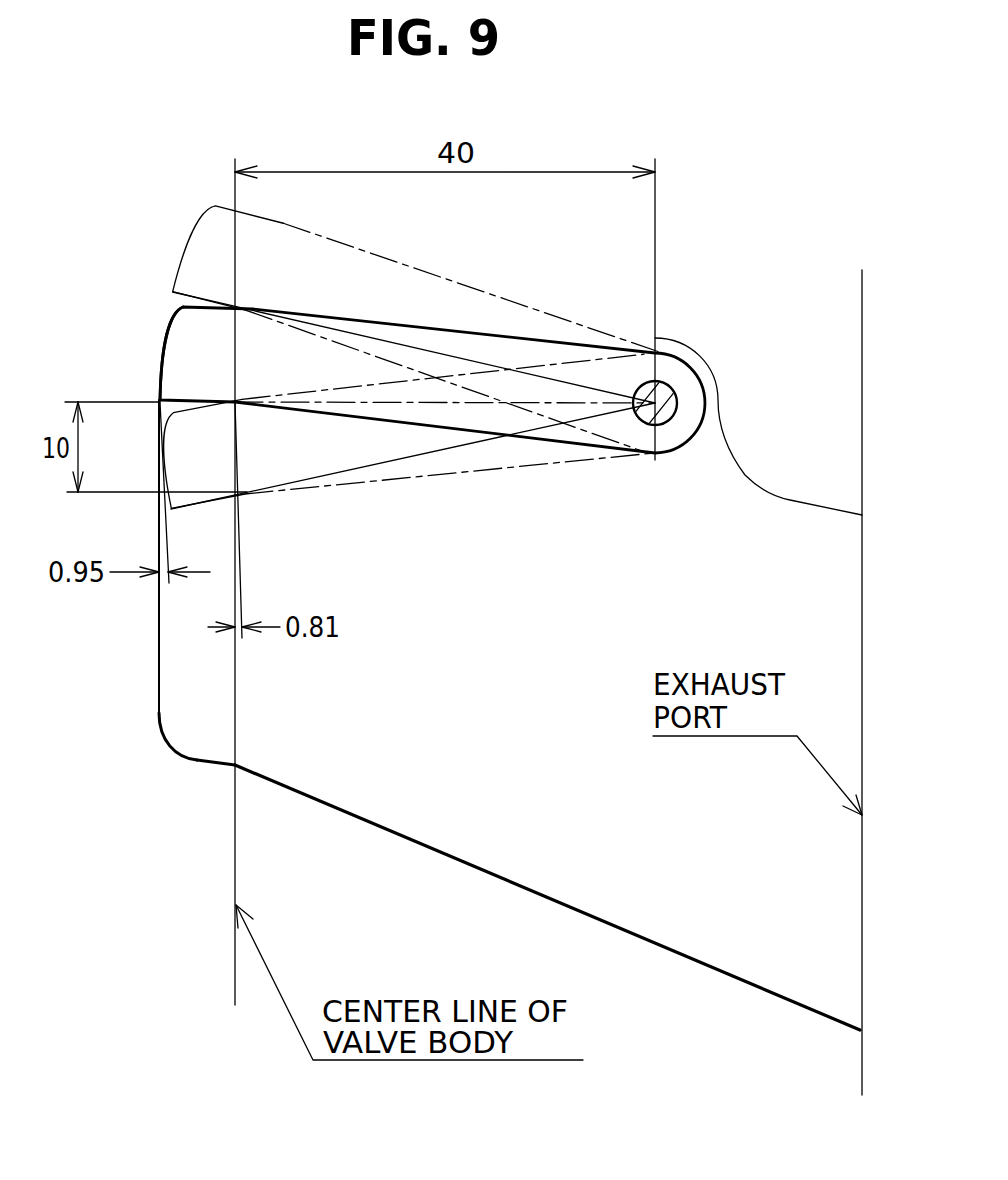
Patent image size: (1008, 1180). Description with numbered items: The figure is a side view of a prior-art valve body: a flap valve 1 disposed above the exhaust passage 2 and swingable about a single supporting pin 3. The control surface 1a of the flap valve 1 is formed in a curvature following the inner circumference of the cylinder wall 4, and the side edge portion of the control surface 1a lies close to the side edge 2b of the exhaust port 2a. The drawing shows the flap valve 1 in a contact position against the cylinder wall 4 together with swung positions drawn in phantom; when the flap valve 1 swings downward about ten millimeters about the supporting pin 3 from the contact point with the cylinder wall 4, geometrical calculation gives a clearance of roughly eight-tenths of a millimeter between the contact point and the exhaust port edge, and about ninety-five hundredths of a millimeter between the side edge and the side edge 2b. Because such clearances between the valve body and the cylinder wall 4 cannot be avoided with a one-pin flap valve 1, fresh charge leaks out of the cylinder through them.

The flap valve 1 is at (444, 330).
The control surface 1a is at (167, 352).
The exhaust passage 2 is at (664, 915).
The exhaust port 2a is at (178, 712).
The side edge of exhaust port 2b is at (159, 672).
The supporting pin 3 is at (672, 395).
The cylinder wall 4 is at (204, 773).